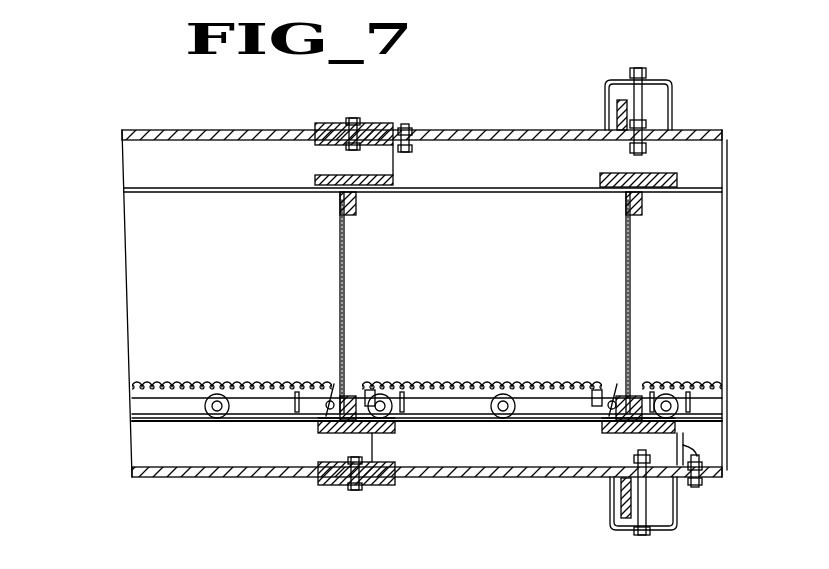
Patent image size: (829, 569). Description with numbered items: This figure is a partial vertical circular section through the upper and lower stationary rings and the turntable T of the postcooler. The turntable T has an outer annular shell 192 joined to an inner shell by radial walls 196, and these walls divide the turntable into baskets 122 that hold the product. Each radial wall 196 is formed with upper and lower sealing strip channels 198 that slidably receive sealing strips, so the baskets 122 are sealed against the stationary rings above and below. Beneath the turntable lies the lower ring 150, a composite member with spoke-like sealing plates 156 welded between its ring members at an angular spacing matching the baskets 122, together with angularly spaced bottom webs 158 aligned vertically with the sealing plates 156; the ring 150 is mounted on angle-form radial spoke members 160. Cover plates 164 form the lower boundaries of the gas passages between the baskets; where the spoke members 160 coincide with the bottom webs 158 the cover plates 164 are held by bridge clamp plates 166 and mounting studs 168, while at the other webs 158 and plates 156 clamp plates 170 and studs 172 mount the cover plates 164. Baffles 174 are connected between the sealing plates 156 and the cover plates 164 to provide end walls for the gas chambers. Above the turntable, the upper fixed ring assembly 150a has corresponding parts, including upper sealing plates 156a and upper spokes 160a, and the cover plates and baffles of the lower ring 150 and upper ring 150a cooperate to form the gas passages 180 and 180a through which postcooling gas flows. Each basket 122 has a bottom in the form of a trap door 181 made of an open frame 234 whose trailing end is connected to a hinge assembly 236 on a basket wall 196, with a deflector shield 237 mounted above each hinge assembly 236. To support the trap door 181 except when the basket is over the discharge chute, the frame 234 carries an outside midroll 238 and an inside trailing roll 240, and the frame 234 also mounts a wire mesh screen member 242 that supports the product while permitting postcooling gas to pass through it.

The turntable T is at (178, 128).
The upper fixed ring assembly 150a is at (176, 156).
The lower ring 150 is at (148, 438).
The upper gas passage 180a is at (280, 179).
The lower gas passage 180 is at (172, 452).
The upper sealing plate 156a is at (395, 182).
The sealing plate 156 is at (335, 434).
The upper spoke 160a is at (619, 111).
The radial spoke member 160 is at (612, 492).
The basket 122 is at (337, 241).
The radial wall 196 is at (339, 272).
The sealing strip channel 198 is at (358, 201).
The outer annular shell 192 is at (195, 255).
The wire mesh screen member 242 is at (180, 386).
The outside midroll 238 is at (217, 394).
The inside trailing roll 240 is at (380, 394).
The trap door 181 is at (250, 386).
The deflector shield 237 is at (330, 399).
The open frame 234 is at (140, 399).
The hinge assembly 236 is at (326, 421).
The bottom web 158 is at (372, 462).
The cover plate 164 is at (212, 470).
The clamp plate 170 is at (325, 482).
The stud 172 is at (357, 490).
The bridge clamp plate 166 is at (621, 506).
The mounting stud 168 is at (626, 529).
The baffle 174 is at (695, 481).